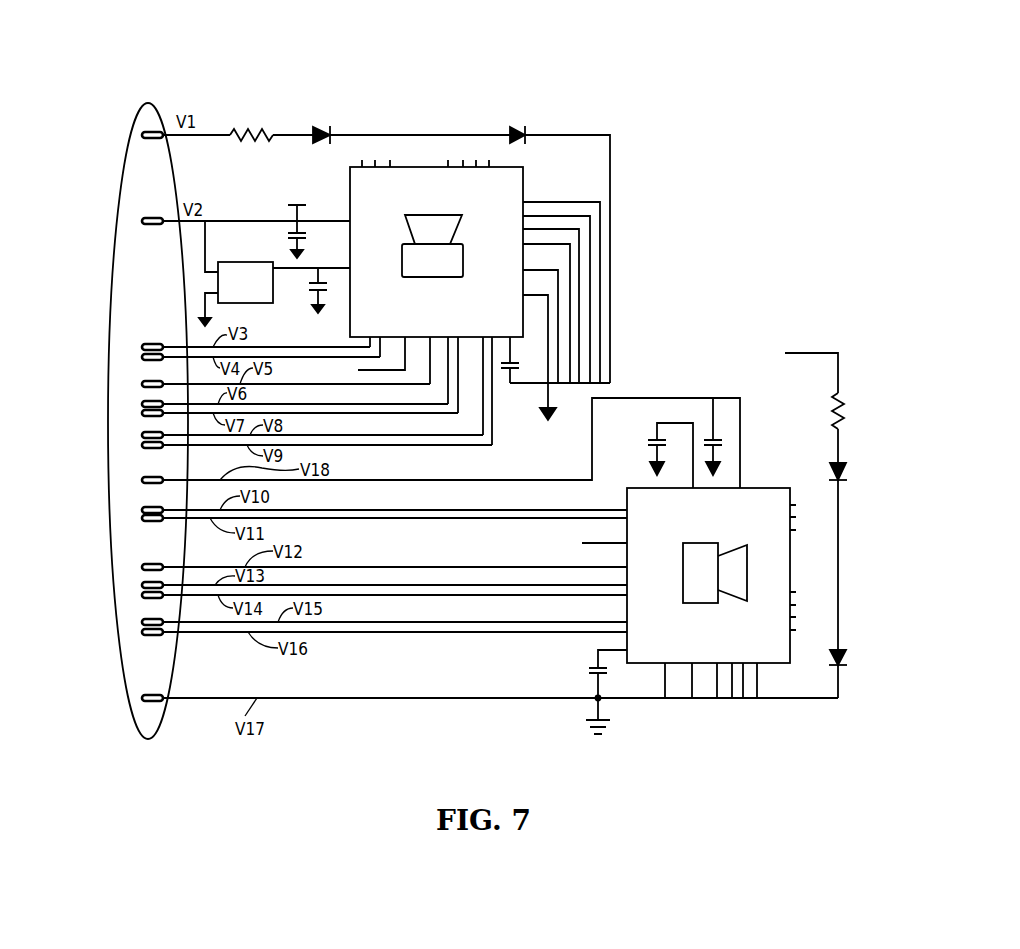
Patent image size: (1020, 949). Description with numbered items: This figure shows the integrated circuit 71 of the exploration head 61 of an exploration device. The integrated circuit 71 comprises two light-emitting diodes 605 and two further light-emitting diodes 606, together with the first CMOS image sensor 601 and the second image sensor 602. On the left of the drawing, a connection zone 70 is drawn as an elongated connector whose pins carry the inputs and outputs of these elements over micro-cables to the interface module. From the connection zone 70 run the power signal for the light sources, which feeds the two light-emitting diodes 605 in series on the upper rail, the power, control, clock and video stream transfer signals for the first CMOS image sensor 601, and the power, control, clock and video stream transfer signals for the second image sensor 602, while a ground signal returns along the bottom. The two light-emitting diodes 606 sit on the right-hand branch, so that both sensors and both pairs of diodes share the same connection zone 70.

The exploration head 61 is at (317, 42).
The connection zone 70 is at (123, 170).
The integrated circuit 71 is at (588, 107).
The first CMOS image sensor 601 is at (523, 183).
The second image sensor 602 is at (775, 482).
The light-emitting diodes 605 is at (313, 130).
The light-emitting diodes 606 is at (846, 470).